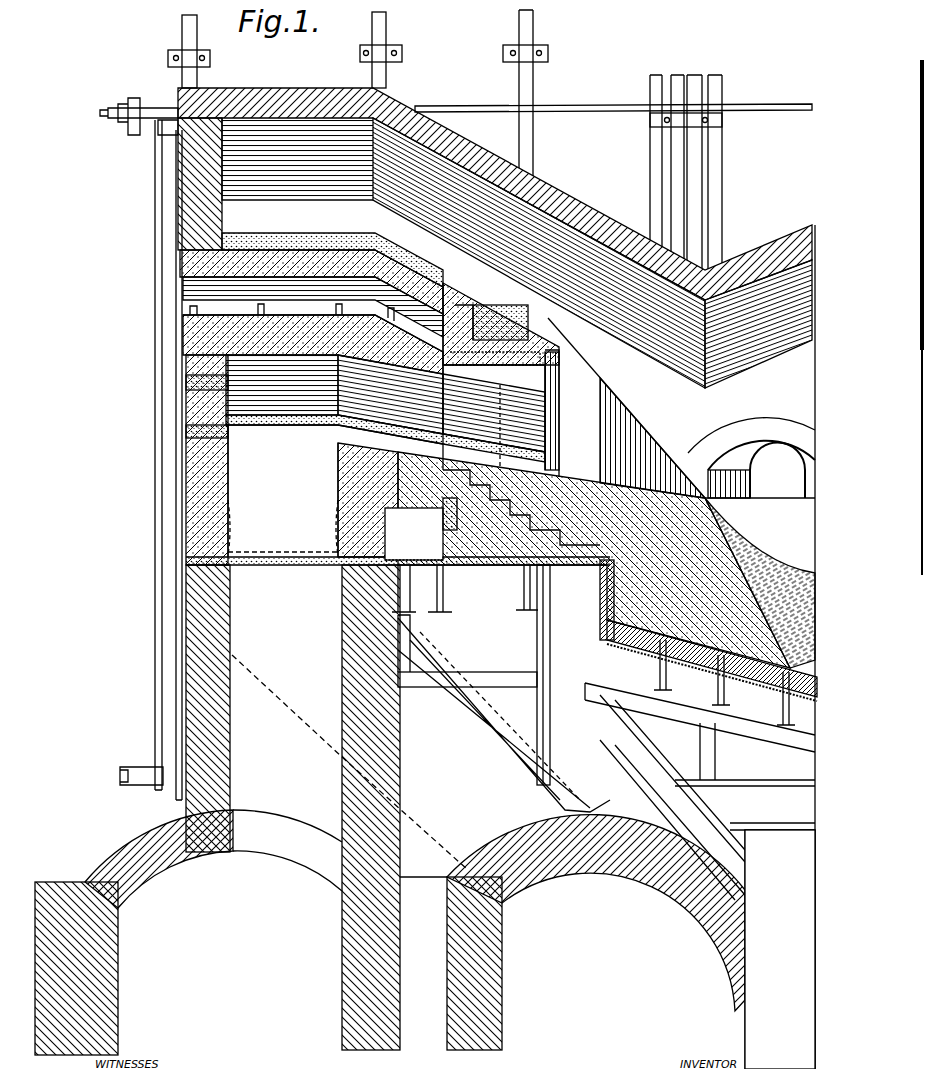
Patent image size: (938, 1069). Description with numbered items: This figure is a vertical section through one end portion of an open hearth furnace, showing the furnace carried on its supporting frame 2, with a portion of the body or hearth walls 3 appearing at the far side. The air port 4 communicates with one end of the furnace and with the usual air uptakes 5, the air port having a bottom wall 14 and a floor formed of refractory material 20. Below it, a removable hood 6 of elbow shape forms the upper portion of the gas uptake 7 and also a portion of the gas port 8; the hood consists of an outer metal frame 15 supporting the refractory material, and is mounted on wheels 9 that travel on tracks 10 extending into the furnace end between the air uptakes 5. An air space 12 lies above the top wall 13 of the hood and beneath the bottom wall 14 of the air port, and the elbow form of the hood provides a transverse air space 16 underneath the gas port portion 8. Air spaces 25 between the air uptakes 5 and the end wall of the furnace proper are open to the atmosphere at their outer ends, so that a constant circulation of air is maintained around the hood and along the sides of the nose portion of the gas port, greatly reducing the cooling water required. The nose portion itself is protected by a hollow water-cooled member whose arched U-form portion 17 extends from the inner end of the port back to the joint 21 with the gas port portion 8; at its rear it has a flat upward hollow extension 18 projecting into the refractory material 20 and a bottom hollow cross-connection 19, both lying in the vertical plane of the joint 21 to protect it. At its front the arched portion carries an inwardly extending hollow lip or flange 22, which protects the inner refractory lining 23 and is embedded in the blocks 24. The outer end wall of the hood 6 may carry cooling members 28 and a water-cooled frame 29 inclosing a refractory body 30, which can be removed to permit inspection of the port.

The supporting frame 2 is at (720, 168).
The body or hearth walls 3 is at (751, 647).
The air port 4 is at (495, 238).
The air uptakes 5 is at (525, 820).
The removable hood 6 is at (188, 470).
The gas uptake 7 is at (348, 647).
The gas port 8 is at (385, 405).
The wheels 9 is at (234, 520).
The tracks 10 is at (270, 556).
The air space 12 is at (188, 304).
The top wall 13 is at (230, 333).
The bottom wall 14 is at (195, 266).
The outer metal frame 15 is at (283, 318).
The transverse air space 16 is at (421, 529).
The arched U-form portion 17 is at (555, 352).
The upward hollow extension 18 is at (500, 322).
The bottom hollow cross-connection 19 is at (414, 549).
The refractory material 20 is at (478, 319).
The joint 21 is at (445, 444).
The hollow lip or flange 22 is at (550, 423).
The inner refractory lining 23 is at (552, 398).
The blocks 24 is at (572, 378).
The air spaces 25 is at (505, 452).
The cooling members 28 is at (284, 415).
The water-cooled frame 29 is at (192, 436).
The refractory body 30 is at (192, 405).